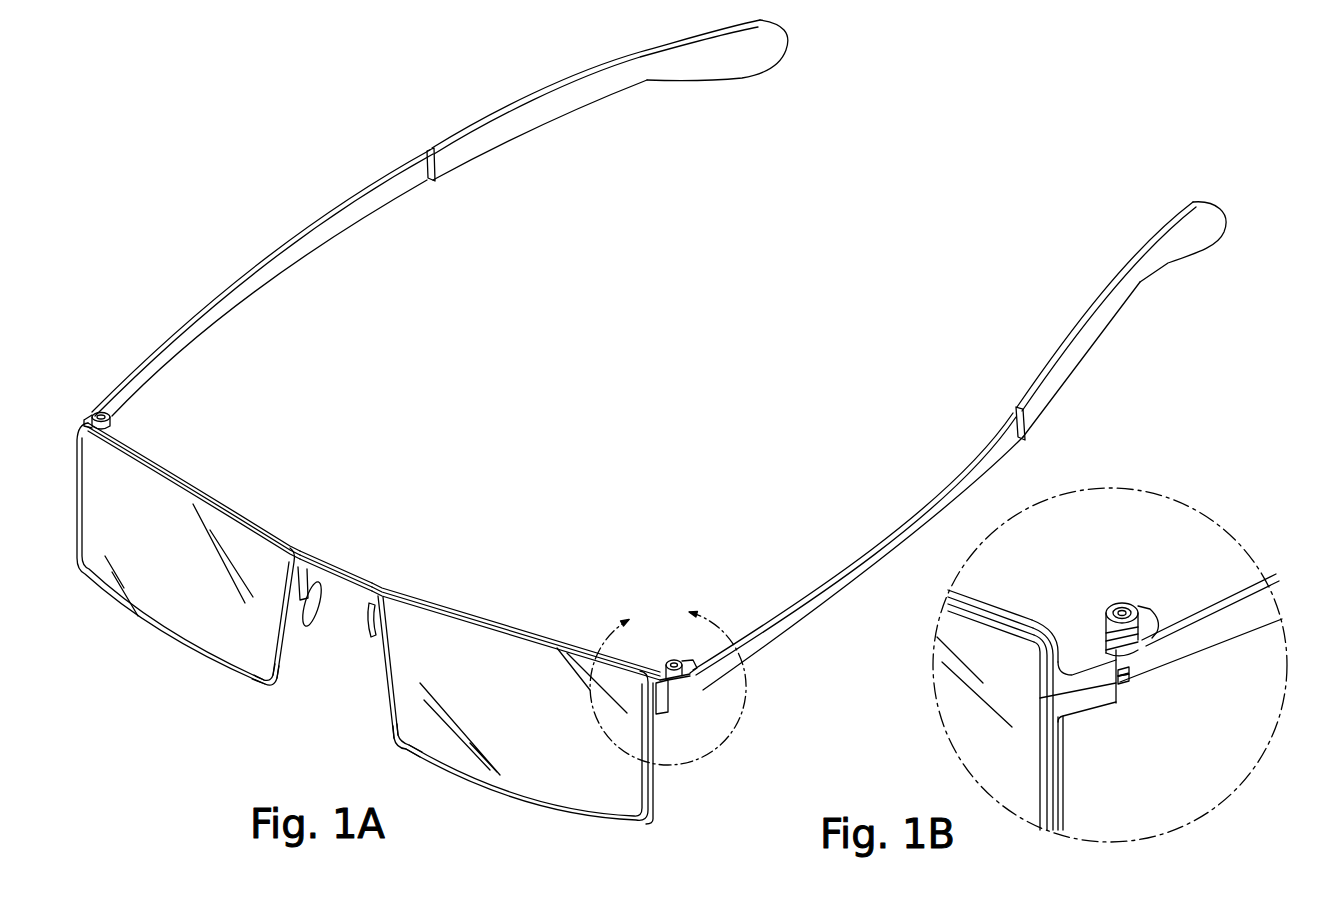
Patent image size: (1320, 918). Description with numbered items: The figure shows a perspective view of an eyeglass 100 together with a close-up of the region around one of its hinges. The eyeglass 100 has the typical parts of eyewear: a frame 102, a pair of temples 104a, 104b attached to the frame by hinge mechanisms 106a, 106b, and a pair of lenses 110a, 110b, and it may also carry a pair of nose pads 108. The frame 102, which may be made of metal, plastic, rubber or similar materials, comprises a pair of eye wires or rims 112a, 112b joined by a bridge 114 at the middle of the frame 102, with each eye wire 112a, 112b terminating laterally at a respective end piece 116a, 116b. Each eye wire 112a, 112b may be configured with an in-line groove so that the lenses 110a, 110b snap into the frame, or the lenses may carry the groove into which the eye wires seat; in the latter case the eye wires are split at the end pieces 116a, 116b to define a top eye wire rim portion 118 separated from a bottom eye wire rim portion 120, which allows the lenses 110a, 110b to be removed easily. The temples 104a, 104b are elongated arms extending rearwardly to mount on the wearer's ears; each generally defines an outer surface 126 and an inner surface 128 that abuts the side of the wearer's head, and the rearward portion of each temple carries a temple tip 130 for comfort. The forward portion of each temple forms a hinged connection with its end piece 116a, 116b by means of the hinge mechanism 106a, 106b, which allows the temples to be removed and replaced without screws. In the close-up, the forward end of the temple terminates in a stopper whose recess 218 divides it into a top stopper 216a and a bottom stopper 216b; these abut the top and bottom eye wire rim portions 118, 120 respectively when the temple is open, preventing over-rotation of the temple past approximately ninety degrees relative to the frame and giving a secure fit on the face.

In FIG. 1A, the eyeglass 100 is at (384, 104).
In FIG. 1A, the frame 102 is at (294, 542).
In FIG. 1A, the temple 104a is at (384, 200).
In FIG. 1A, the temple 104b is at (913, 513).
In FIG. 1B, the temple 104b is at (1232, 594).
In FIG. 1A, the hinge mechanism 106a is at (145, 412).
In FIG. 1A, the hinge mechanism 106b is at (699, 650).
In FIG. 1B, the hinge mechanism 106b is at (1122, 582).
In FIG. 1A, the nose pads 108 is at (320, 620).
In FIG. 1A, the lens 110a is at (243, 653).
In FIG. 1A, the lens 110b is at (596, 798).
In FIG. 1A, the eye wire 112a is at (279, 686).
In FIG. 1A, the eye wire 112b is at (396, 746).
In FIG. 1B, the eye wire 112b is at (978, 600).
In FIG. 1A, the bridge 114 is at (350, 565).
In FIG. 1A, the end piece 116a is at (87, 399).
In FIG. 1A, the end piece 116b is at (661, 724).
In FIG. 1B, the end piece 116b is at (1148, 742).
In FIG. 1B, the top eye wire rim portion 118 is at (1080, 722).
In FIG. 1B, the bottom eye wire rim portion 120 is at (1068, 712).
In FIG. 1A, the outer surface 126 is at (808, 625).
In FIG. 1A, the inner surface 128 is at (816, 578).
In FIG. 1A, the temple tip 130 is at (766, 57).
In FIG. 1B, the top stopper 216a is at (1136, 668).
In FIG. 1B, the bottom stopper 216b is at (1137, 695).
In FIG. 1B, the recess 218 is at (1133, 680).